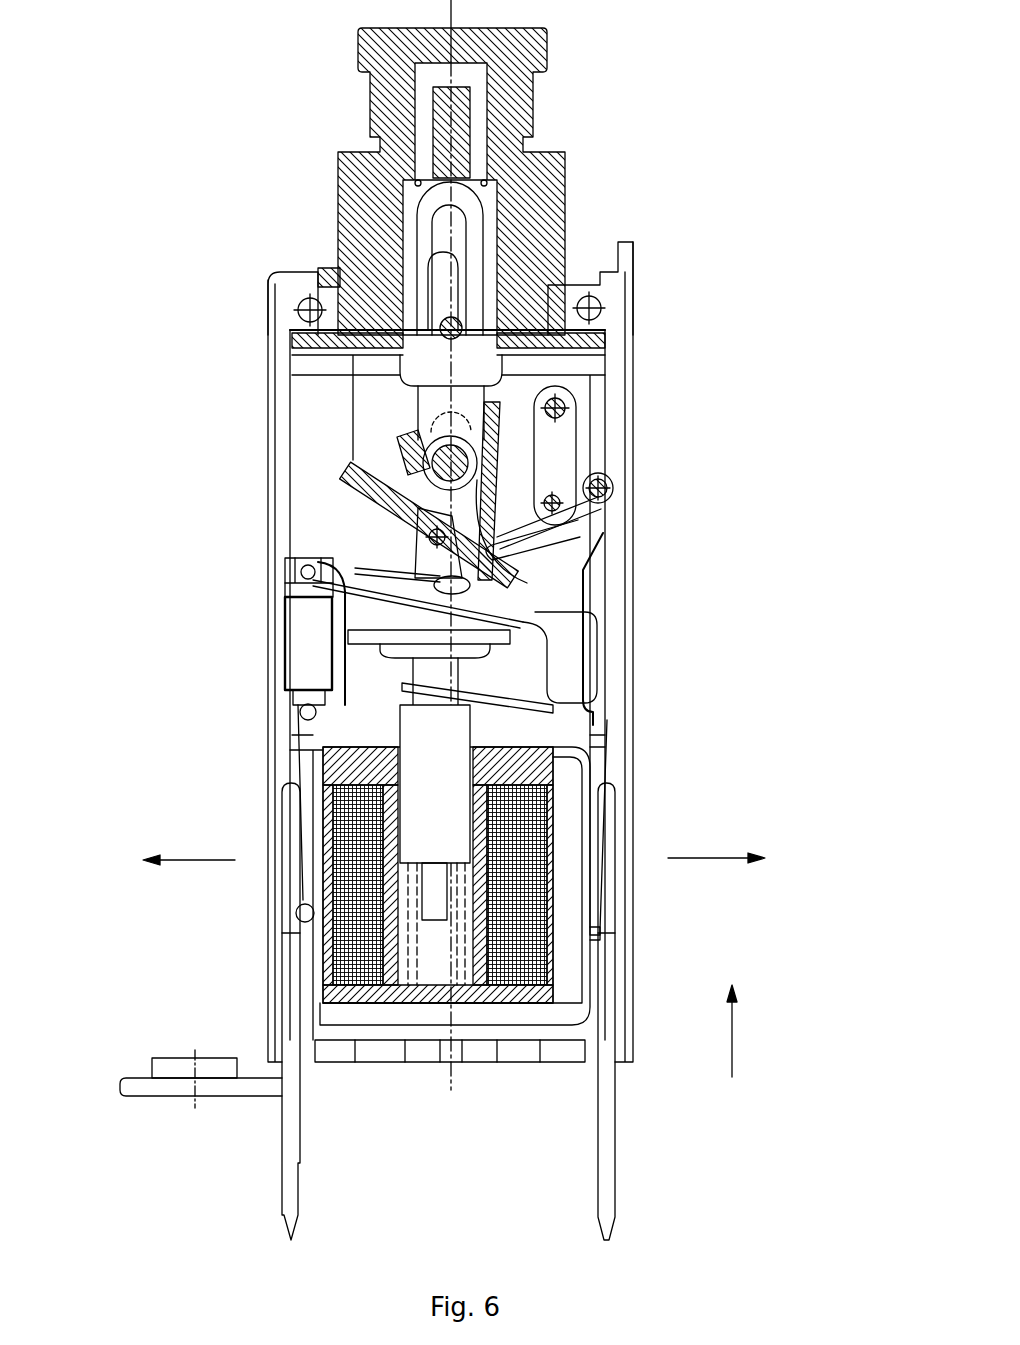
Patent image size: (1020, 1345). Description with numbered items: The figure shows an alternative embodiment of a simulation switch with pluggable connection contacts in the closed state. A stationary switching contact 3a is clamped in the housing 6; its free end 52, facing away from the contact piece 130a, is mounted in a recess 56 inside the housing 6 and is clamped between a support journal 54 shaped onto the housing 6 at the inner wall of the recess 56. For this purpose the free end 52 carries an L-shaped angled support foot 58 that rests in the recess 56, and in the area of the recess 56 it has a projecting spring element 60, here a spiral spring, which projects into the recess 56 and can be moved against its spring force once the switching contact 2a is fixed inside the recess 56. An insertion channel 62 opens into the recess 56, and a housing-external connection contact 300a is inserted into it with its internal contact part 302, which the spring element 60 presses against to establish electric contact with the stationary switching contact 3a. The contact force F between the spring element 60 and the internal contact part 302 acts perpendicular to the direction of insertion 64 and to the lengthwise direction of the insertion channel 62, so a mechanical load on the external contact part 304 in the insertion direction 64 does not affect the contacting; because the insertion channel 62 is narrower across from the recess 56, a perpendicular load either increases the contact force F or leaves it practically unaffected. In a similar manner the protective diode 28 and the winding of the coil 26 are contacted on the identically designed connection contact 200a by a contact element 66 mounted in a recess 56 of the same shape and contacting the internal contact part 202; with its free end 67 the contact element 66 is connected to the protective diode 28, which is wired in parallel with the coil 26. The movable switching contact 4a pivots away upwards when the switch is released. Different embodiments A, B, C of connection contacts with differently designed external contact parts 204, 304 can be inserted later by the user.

The housing 6 is at (682, 385).
The switching contact 2a is at (347, 572).
The movable switching contact 4a is at (372, 553).
The stationary switching contact 3a is at (540, 618).
The contact piece 130a is at (355, 601).
The protective diode 28 is at (300, 645).
The support journal 54 is at (470, 600).
The recess 56 is at (290, 748).
The free end of contact element 67 is at (302, 770).
The contact element 66 is at (297, 826).
The internal contact part 202 is at (290, 868).
The coil 26 is at (330, 970).
The insertion channel 62 is at (282, 998).
The free end 52 is at (602, 770).
The spring element 60 is at (607, 826).
The internal contact part 302 is at (606, 890).
The support foot 58 is at (600, 945).
The direction of insertion 64 is at (733, 1040).
The housing-external connection contact 300a is at (612, 1160).
The external contact part 304 is at (600, 1197).
The housing-external connection contact 200a is at (300, 1206).
The external contact part 204 is at (283, 1185).
The embodiment of connection contact A is at (283, 1212).
The embodiment of connection contact B is at (302, 1118).
The embodiment of connection contact C is at (152, 1088).
The contact force F is at (185, 858).